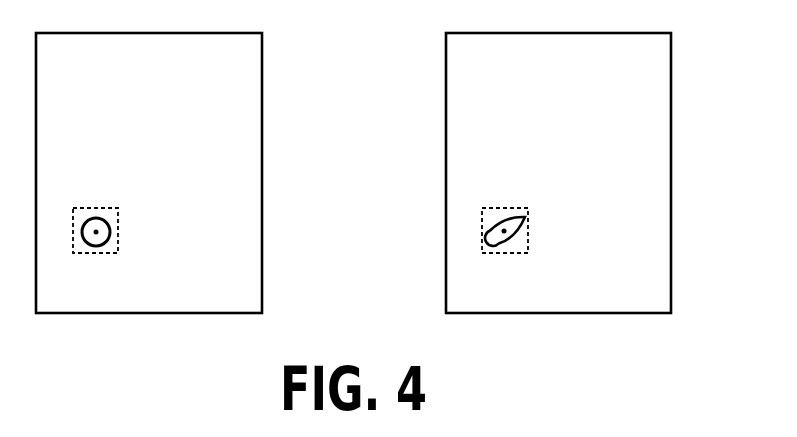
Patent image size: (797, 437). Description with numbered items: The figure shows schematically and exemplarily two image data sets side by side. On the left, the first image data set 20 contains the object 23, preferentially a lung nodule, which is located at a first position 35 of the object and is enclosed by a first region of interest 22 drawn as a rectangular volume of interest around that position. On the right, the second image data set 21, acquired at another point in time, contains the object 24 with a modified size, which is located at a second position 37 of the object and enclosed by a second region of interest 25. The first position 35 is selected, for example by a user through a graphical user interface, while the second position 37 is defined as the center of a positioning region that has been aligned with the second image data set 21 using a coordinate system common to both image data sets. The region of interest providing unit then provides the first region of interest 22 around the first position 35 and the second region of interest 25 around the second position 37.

The first image data set 20 is at (262, 79).
The second image data set 21 is at (671, 79).
The first region of interest 22 is at (98, 208).
The object 23 is at (115, 231).
The object with a modified size 24 is at (519, 215).
The second region of interest 25 is at (528, 247).
The first position of the object 35 is at (97, 237).
The second position of the object 37 is at (505, 242).